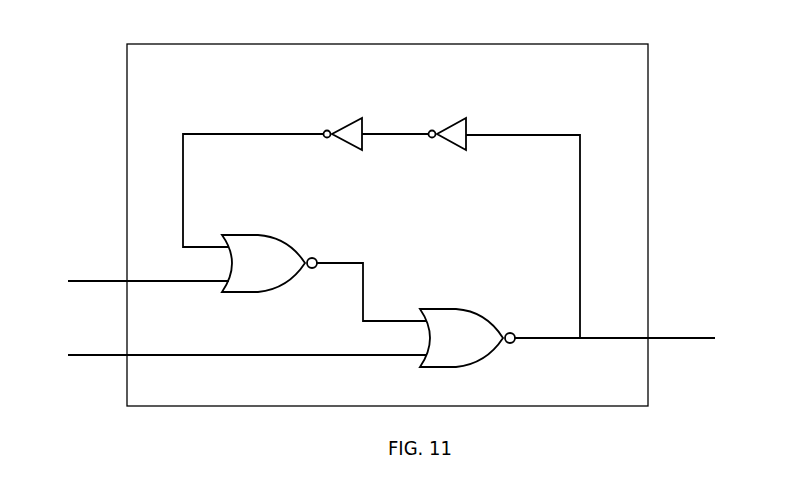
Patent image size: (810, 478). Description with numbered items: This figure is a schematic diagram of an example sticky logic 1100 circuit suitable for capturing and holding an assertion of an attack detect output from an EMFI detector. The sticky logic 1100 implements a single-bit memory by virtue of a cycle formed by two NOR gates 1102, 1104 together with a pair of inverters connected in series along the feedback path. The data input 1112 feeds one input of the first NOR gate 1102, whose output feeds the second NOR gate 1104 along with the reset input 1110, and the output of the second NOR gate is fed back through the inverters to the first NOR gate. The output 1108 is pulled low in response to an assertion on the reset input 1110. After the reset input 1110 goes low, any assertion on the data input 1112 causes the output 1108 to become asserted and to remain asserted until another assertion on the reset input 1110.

The sticky logic 1100 is at (620, 44).
The NOR gate 1102 is at (274, 235).
The NOR gate 1104 is at (472, 309).
The output 1108 is at (678, 340).
The reset input 1110 is at (97, 357).
The data input 1112 is at (97, 283).